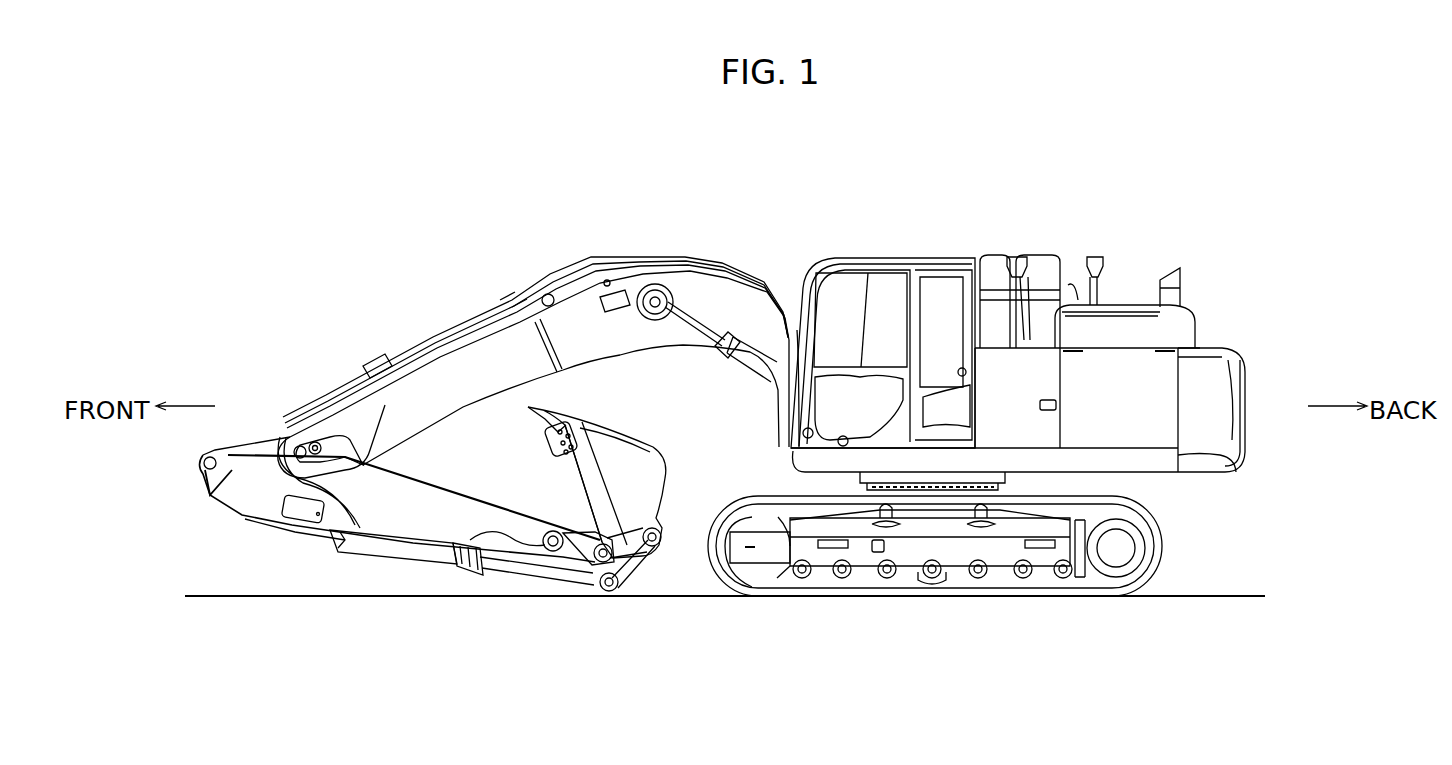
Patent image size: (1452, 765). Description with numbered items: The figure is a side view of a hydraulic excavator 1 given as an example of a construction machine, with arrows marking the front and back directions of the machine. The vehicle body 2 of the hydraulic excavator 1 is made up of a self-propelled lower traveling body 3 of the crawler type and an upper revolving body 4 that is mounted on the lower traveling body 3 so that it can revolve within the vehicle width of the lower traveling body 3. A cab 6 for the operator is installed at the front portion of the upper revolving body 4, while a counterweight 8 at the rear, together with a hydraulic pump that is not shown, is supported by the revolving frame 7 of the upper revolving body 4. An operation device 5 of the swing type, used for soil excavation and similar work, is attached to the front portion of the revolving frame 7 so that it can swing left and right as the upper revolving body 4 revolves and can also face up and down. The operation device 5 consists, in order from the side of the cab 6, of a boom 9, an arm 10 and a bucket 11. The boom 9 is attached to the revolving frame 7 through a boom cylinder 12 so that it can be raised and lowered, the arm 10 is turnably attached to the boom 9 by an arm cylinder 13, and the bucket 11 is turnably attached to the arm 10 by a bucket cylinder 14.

The hydraulic excavator 1 is at (1204, 180).
The vehicle body 2 is at (1265, 344).
The lower traveling body 3 is at (1175, 551).
The upper revolving body 4 is at (1260, 448).
The operation device 5 is at (651, 232).
The cab 6 is at (866, 243).
The revolving frame 7 is at (803, 461).
The counterweight 8 is at (1218, 388).
The boom 9 is at (656, 367).
The arm 10 is at (462, 480).
The bucket 11 is at (676, 485).
The boom cylinder 12 is at (738, 380).
The arm cylinder 13 is at (490, 335).
The bucket cylinder 14 is at (523, 572).